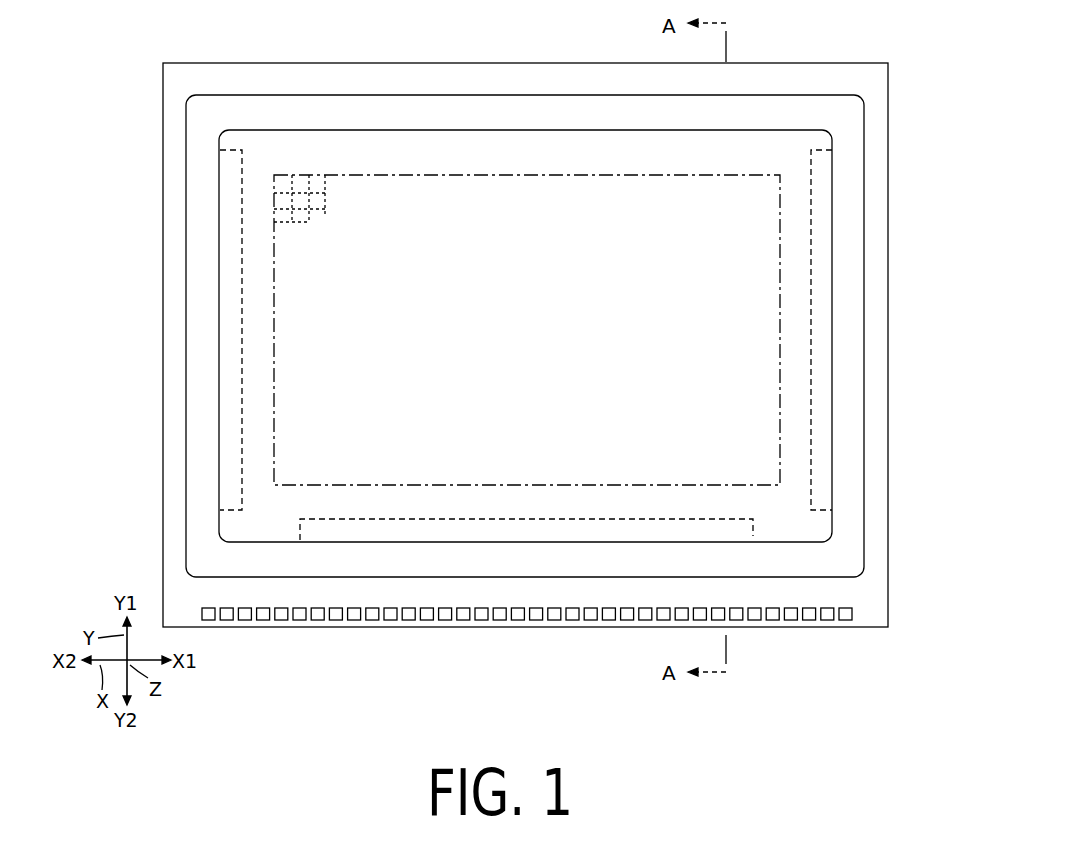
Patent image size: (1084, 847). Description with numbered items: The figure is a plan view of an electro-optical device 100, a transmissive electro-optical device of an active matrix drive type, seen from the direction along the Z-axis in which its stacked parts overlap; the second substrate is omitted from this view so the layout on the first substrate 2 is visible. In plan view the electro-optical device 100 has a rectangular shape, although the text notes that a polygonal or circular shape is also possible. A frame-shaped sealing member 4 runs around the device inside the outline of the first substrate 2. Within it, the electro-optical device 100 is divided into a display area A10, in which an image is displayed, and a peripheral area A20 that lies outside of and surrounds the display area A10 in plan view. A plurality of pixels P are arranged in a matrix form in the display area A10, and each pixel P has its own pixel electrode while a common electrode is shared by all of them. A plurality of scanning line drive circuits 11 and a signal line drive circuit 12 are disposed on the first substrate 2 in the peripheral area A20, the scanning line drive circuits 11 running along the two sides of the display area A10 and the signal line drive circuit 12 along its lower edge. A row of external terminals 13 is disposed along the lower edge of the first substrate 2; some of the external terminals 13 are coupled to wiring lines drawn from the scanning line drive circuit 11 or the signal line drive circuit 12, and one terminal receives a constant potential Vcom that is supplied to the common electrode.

The electro-optical device 100 is at (877, 19).
The first substrate 2 is at (892, 98).
The sealing member 4 is at (860, 190).
The scanning line drive circuit 11 is at (244, 146).
The signal line drive circuit 12 is at (753, 530).
The external terminal 13 is at (498, 620).
The pixel P is at (325, 214).
The display area A10 is at (780, 372).
The peripheral area A20 is at (737, 409).